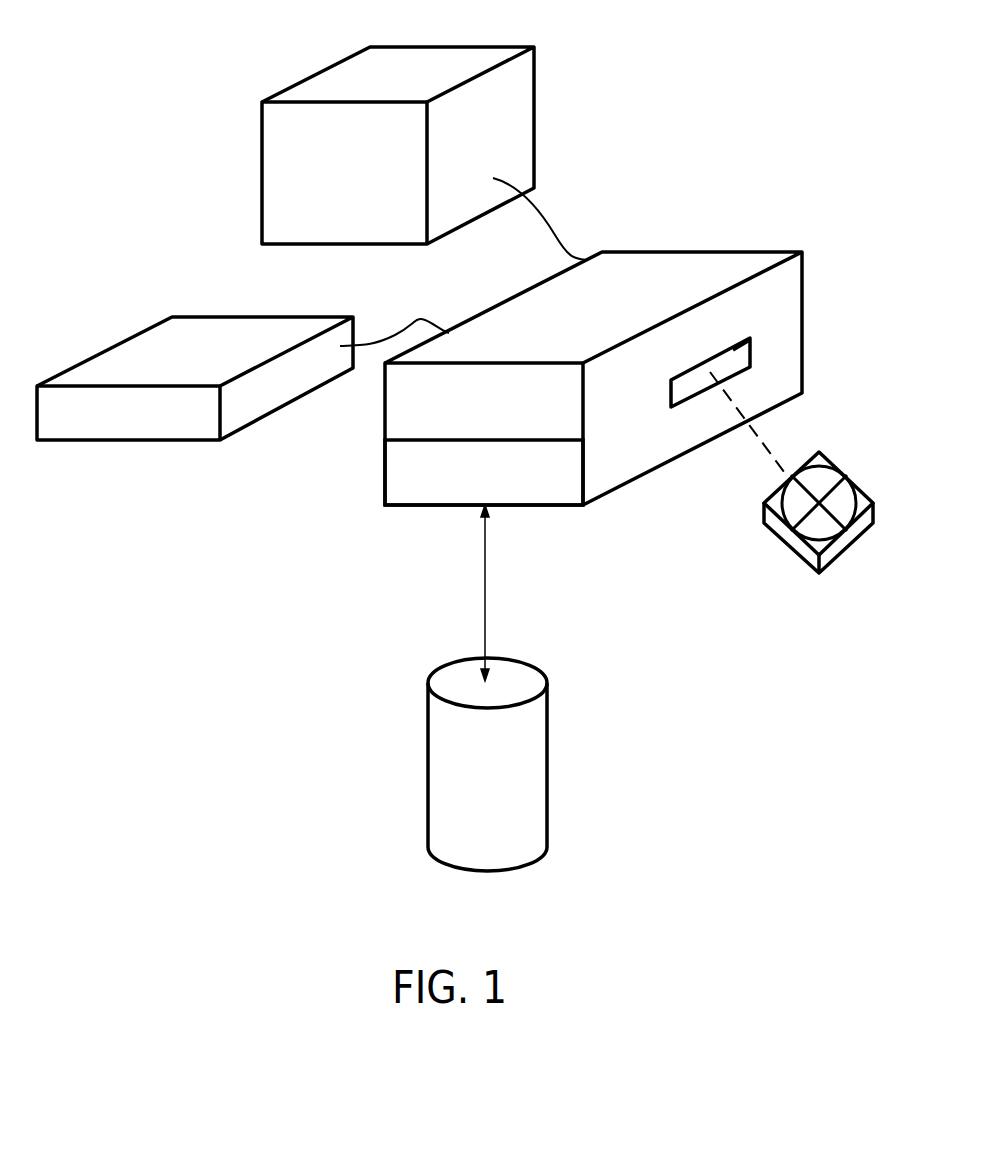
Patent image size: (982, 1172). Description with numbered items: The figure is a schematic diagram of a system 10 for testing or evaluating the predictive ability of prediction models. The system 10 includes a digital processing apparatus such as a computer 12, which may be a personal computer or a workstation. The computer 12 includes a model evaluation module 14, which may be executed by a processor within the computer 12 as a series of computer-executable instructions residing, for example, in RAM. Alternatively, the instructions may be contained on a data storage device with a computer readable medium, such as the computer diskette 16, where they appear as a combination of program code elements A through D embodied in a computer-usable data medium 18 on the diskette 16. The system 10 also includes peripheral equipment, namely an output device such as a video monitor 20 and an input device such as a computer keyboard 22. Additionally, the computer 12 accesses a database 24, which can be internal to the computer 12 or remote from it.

The prediction model evaluation system 10 is at (279, 511).
The computer 12 is at (663, 265).
The model evaluation module 14 is at (570, 473).
The computer diskette 16 is at (865, 493).
The computer-usable data medium 18 is at (818, 465).
The video monitor 20 is at (522, 85).
The computer keyboard 22 is at (187, 332).
The database 24 is at (535, 730).